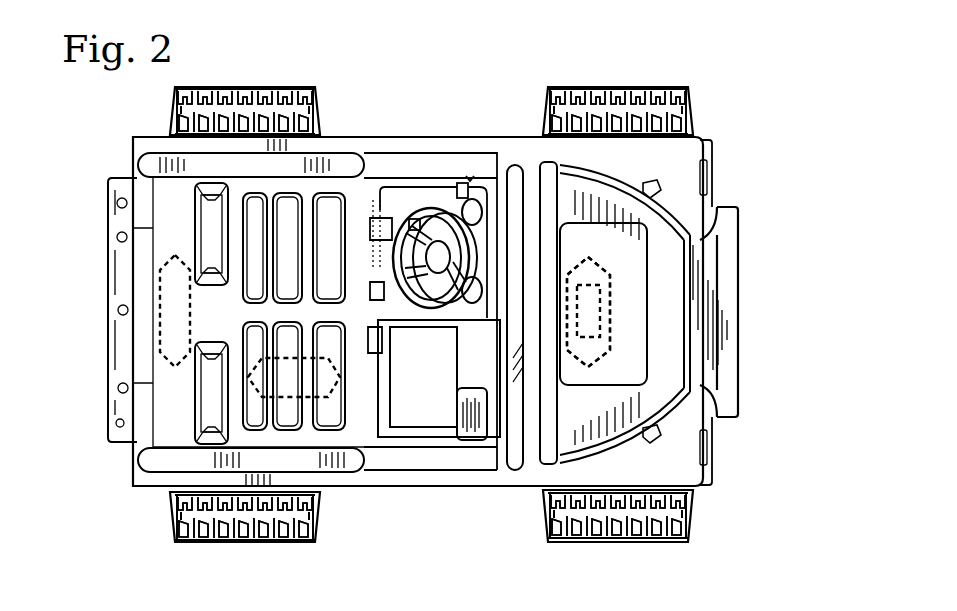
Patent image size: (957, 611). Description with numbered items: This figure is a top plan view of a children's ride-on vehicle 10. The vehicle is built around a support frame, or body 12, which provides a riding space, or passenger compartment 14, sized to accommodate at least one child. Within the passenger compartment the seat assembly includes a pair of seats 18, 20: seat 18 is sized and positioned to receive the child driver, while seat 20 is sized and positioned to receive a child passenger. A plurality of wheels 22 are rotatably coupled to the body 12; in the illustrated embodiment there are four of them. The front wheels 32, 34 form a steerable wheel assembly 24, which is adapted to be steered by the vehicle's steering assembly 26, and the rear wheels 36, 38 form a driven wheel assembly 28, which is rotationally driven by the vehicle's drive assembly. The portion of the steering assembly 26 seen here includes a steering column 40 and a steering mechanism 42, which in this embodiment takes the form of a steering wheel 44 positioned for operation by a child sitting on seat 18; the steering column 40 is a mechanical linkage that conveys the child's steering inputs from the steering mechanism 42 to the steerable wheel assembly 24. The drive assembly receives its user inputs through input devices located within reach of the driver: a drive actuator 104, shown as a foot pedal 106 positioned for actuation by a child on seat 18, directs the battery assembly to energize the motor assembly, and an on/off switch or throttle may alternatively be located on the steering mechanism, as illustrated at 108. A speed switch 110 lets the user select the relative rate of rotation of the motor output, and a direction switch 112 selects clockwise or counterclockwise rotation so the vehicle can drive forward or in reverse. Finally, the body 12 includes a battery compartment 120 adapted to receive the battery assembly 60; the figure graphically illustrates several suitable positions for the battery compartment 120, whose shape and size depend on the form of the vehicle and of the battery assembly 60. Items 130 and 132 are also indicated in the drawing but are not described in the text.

The children's ride-on vehicle 10 is at (775, 180).
The body 12 is at (742, 257).
The passenger compartment 14 is at (422, 170).
The seat 18 is at (213, 207).
The seat 20 is at (213, 380).
The wheels 22 is at (420, 316).
The steerable wheel assembly 24 is at (660, 88).
The steering assembly 26 is at (487, 266).
The driven wheel assembly 28 is at (283, 88).
The front wheel 32 is at (578, 88).
The front wheel 34 is at (590, 542).
The rear wheel 36 is at (208, 90).
The rear wheel 38 is at (218, 542).
The steering column 40 is at (482, 258).
The steering mechanism 42 is at (400, 308).
The steering wheel 44 is at (440, 315).
The battery assembly 60 is at (603, 297).
The drive actuator 104 is at (414, 275).
The foot pedal 106 is at (426, 257).
The on/off switch or throttle 108 is at (410, 222).
The speed switch 110 is at (458, 173).
The direction switch 112 is at (471, 175).
The battery compartment 120 is at (163, 357).
The foot well 130 is at (465, 312).
The hood latch 132 is at (657, 388).